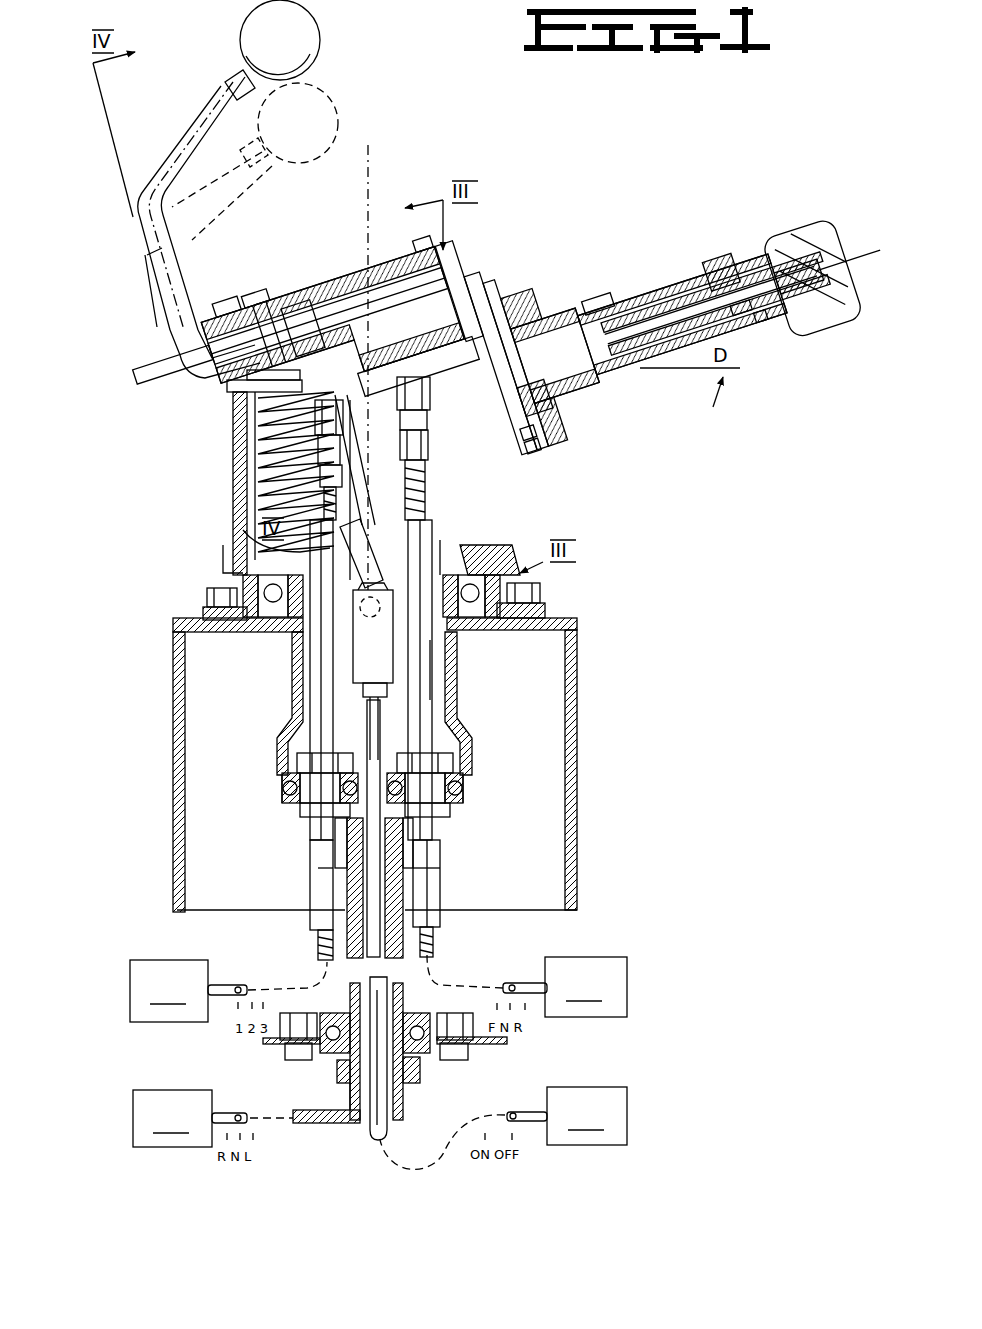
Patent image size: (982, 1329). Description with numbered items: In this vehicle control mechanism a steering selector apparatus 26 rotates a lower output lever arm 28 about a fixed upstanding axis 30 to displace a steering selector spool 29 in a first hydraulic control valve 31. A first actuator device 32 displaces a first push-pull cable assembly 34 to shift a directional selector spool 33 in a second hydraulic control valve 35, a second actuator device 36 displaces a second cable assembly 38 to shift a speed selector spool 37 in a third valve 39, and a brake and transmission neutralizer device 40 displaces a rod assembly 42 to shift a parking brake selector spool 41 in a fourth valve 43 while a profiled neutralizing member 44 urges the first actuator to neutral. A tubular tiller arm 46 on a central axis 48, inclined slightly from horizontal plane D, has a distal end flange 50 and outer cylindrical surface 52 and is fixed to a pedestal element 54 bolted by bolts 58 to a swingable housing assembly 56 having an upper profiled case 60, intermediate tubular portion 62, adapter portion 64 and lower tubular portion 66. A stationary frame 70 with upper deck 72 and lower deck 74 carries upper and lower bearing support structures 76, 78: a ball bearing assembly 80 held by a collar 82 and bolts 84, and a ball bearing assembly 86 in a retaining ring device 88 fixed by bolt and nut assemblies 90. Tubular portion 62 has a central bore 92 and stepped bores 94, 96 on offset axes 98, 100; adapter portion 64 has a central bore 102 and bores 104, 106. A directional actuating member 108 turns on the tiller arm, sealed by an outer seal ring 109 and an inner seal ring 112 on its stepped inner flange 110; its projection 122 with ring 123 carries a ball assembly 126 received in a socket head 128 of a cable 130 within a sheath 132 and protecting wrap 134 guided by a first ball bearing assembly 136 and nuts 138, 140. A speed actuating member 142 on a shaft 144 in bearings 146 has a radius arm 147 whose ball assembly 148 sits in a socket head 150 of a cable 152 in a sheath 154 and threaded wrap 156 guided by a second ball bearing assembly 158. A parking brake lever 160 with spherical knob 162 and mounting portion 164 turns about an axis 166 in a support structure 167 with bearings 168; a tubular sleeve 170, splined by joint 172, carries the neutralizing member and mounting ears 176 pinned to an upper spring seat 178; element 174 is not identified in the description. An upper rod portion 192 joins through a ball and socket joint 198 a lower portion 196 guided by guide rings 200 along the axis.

The steering selector apparatus 26 is at (237, 483).
The output lever arm 28 is at (300, 1110).
The steering selector spool 29 is at (220, 1110).
The fixed upstanding axis 30 is at (375, 142).
The first hydraulic control valve 31 is at (172, 1118).
The first actuator device 32 is at (653, 277).
The directional selector spool 33 is at (530, 983).
The first push-pull cable assembly 34 is at (432, 677).
The second hydraulic control valve 35 is at (586, 987).
The second actuator device 36 is at (787, 217).
The speed selector spool 37 is at (220, 983).
The second push-pull cable assembly 38 is at (313, 657).
The third hydraulic control valve 39 is at (169, 991).
The brake and transmission neutralizer device 40 is at (212, 110).
The parking brake selector spool 41 is at (535, 1110).
The push-pull rod assembly 42 is at (367, 713).
The fourth hydraulic control valve 43 is at (587, 1116).
The profiled neutralizing member 44 is at (420, 260).
The tubular tiller arm 46 is at (693, 307).
The central outstanding axis 48 is at (847, 237).
The distal end flange 50 is at (763, 250).
The outer cylindrical surface 52 is at (620, 293).
The supporting pedestal element 54 is at (525, 300).
The swingable housing assembly 56 is at (517, 570).
The threaded fasteners or bolts 58 is at (527, 473).
The upper profiled case 60 is at (237, 460).
The intermediate tubular portion 62 is at (293, 683).
The intermediate adapter portion 64 is at (350, 830).
The lower tubular portion 66 is at (353, 992).
The stationary frame 70 is at (173, 757).
The upper deck 72 is at (187, 625).
The lower deck 74 is at (263, 1043).
The upper bearing support structure 76 is at (547, 592).
The lower bearing support structure 78 is at (467, 1013).
The ball bearing assembly 80 is at (270, 623).
The annular retaining member or collar 82 is at (203, 607).
The threaded fasteners or bolts 84 is at (210, 590).
The ball bearing assembly 86 is at (423, 1010).
The retaining ring device 88 is at (487, 1040).
The bolt and nut assemblies 90 is at (452, 1060).
The central bore 92 is at (320, 748).
The stepped bore 94 is at (293, 773).
The stepped bore 96 is at (463, 765).
The upstanding axis 98 is at (317, 883).
The upstanding axis 100 is at (447, 877).
The central bore 102 is at (440, 860).
The bore 104 is at (307, 813).
The bore 106 is at (453, 813).
The directional actuating member 108 is at (690, 277).
The outer seal ring 109 is at (763, 317).
The stepped inner flange 110 is at (553, 427).
The inner seal ring 112 is at (530, 447).
The cylindrical projection 122 is at (523, 390).
The cylindrical ring 123 is at (493, 312).
The ball assembly 126 is at (440, 373).
The extendable socket head 128 is at (400, 445).
The depending cable 130 is at (427, 485).
The tubular sheath 132 is at (423, 690).
The outer protecting wrap 134 is at (440, 877).
The first ball bearing assembly 136 is at (463, 788).
The upper nut 138 is at (463, 740).
The lower nut 140 is at (443, 830).
The speed actuating member 142 is at (820, 327).
The elongate cylindrical shaft 144 is at (583, 340).
The needle or sleeve bearings 146 is at (747, 307).
The radius arm 147 is at (301, 307).
The ball assembly 148 is at (257, 430).
The extendable socket head 150 is at (345, 500).
The depending cable 152 is at (317, 507).
The tubular sheath 154 is at (325, 540).
The protecting wrap 156 is at (320, 890).
The second ball bearing assembly 158 is at (273, 785).
The parking brake actuating lever 160 is at (185, 152).
The spherical knob 162 is at (253, 22).
The cylindrical mounting portion 164 is at (258, 270).
The axis 166 is at (167, 373).
The support structure 167 is at (440, 260).
The needle or sleeve bearings 168 is at (460, 263).
The tubular sleeve 170 is at (269, 305).
The spline joint 172 is at (327, 330).
The flange 174 is at (473, 303).
The mounting ears 176 is at (247, 387).
The upper spring seat 178 is at (257, 397).
The upper portion 192 is at (393, 542).
The lower portion 196 is at (345, 920).
The ball and socket joint 198 is at (453, 650).
The guide rings 200 is at (338, 858).